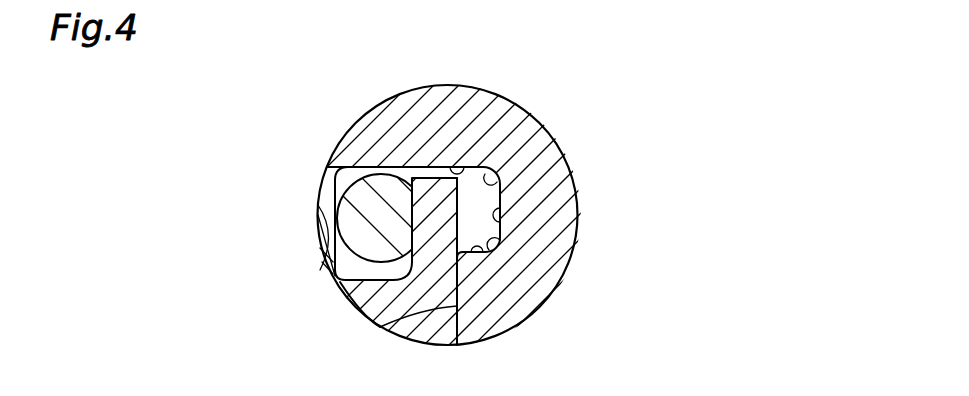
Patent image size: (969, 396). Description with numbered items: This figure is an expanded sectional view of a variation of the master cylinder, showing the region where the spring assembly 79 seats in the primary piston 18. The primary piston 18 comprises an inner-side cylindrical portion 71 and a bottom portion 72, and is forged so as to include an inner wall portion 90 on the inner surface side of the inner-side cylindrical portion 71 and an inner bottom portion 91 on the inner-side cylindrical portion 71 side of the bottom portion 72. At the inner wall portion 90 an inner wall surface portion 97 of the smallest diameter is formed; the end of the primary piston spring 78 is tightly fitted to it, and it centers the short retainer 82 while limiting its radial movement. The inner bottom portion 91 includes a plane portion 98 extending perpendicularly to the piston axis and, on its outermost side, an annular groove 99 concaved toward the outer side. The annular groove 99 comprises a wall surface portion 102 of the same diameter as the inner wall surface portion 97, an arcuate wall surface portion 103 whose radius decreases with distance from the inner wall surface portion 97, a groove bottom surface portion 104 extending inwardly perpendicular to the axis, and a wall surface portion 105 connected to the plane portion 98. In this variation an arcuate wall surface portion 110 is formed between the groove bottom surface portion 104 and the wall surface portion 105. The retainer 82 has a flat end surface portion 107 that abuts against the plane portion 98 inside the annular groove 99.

The primary piston 18 is at (534, 115).
The inner-side cylindrical portion 71 is at (393, 105).
The bottom portion 72 is at (566, 180).
The primary piston spring 78 is at (358, 235).
The spring assembly 79 is at (341, 291).
The short retainer 82 is at (353, 304).
The inner wall portion 90 is at (351, 185).
The inner bottom portion 91 is at (413, 337).
The inner wall surface portion 97 is at (338, 178).
The plane portion 98 is at (457, 328).
The annular groove 99 is at (500, 196).
The wall surface portion 102 is at (457, 167).
The arcuate wall surface portion 103 is at (527, 165).
The groove bottom surface portion 104 is at (503, 222).
The wall surface portion 105 is at (477, 257).
The end surface portion 107 is at (458, 237).
The arcuate wall surface portion 110 is at (500, 247).